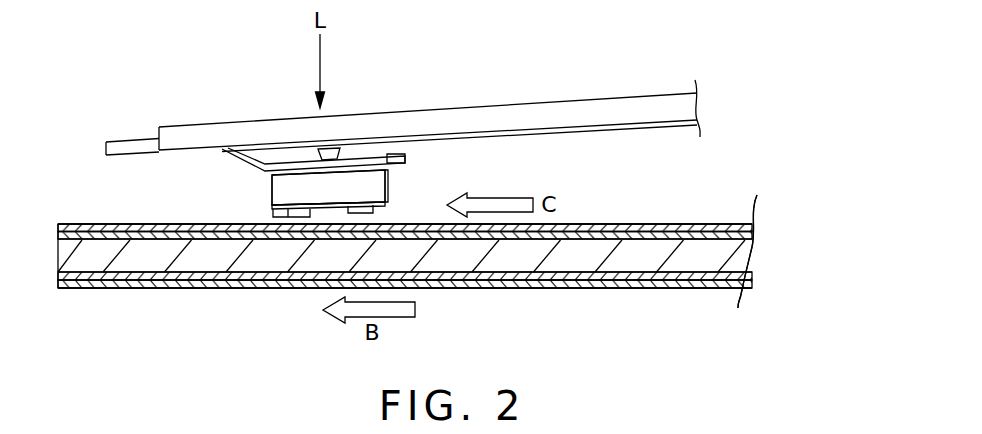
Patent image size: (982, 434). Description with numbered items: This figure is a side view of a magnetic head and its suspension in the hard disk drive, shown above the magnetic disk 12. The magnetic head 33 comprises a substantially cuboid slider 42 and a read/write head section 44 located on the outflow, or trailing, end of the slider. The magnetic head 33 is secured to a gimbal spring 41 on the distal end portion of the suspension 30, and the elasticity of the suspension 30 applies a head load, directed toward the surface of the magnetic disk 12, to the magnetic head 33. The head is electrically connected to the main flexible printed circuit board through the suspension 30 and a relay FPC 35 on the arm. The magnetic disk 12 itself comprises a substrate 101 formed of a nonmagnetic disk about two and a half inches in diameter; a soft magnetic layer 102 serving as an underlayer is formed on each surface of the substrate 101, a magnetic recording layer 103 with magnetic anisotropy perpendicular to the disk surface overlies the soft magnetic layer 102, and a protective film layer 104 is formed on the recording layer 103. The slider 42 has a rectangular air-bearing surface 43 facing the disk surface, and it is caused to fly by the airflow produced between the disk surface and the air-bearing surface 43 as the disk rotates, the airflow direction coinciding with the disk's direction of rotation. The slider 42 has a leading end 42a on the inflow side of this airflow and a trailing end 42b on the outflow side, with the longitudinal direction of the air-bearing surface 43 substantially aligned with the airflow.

The magnetic disk 12 is at (718, 199).
The suspension 30 is at (575, 101).
The magnetic head 33 is at (411, 183).
The relay FPC 35 is at (645, 129).
The gimbal spring 41 is at (390, 156).
The slider 42 is at (302, 178).
The leading end 42a is at (387, 176).
The trailing end 42b is at (268, 204).
The air-bearing surface 43 is at (321, 218).
The read/write head section 44 is at (278, 190).
The substrate 101 is at (660, 263).
The soft magnetic layer 102 is at (745, 240).
The magnetic recording layer 103 is at (693, 223).
The protective film layer 104 is at (752, 222).